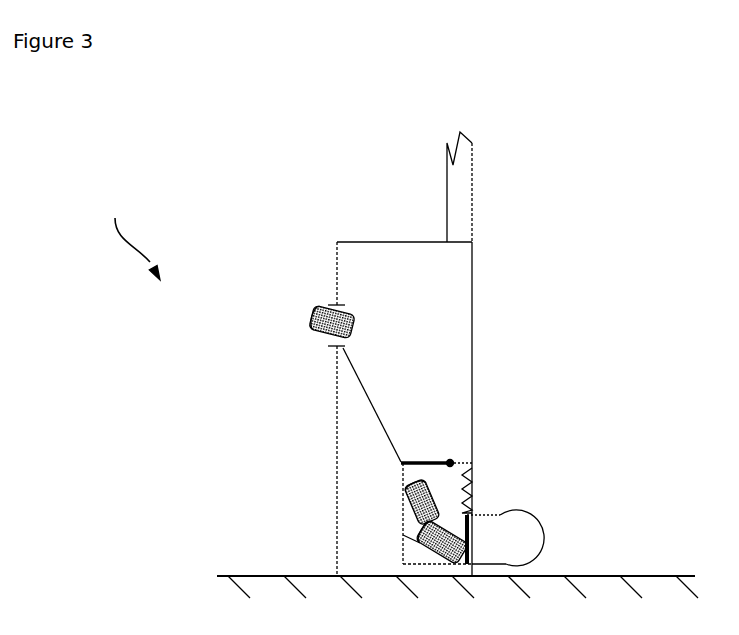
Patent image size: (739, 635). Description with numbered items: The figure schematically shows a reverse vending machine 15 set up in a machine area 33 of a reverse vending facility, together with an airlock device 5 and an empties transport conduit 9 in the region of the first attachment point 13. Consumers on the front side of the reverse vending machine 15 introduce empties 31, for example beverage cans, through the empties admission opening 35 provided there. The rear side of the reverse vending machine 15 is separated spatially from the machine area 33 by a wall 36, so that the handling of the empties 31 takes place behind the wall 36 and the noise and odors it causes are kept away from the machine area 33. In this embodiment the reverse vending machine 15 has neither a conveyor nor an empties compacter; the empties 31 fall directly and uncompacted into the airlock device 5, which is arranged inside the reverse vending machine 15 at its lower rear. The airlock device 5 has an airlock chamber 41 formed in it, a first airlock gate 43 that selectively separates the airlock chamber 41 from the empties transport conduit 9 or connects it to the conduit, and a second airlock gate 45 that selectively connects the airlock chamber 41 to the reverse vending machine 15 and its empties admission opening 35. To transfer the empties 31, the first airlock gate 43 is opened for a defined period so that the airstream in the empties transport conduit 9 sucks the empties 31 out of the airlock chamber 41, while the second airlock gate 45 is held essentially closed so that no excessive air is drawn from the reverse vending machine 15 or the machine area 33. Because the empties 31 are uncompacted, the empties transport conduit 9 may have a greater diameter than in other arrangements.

The machine area 33 is at (131, 232).
The reverse vending machine 15 is at (352, 240).
The wall 36 is at (472, 207).
The empties 31 is at (308, 318).
The empties admission opening 35 is at (337, 342).
The second airlock gate 45 is at (408, 460).
The airlock chamber 41 is at (420, 470).
The airlock device 5 is at (403, 556).
The first attachment point 13 is at (481, 507).
The first airlock gate 43 is at (481, 540).
The empties transport conduit 9 is at (545, 538).